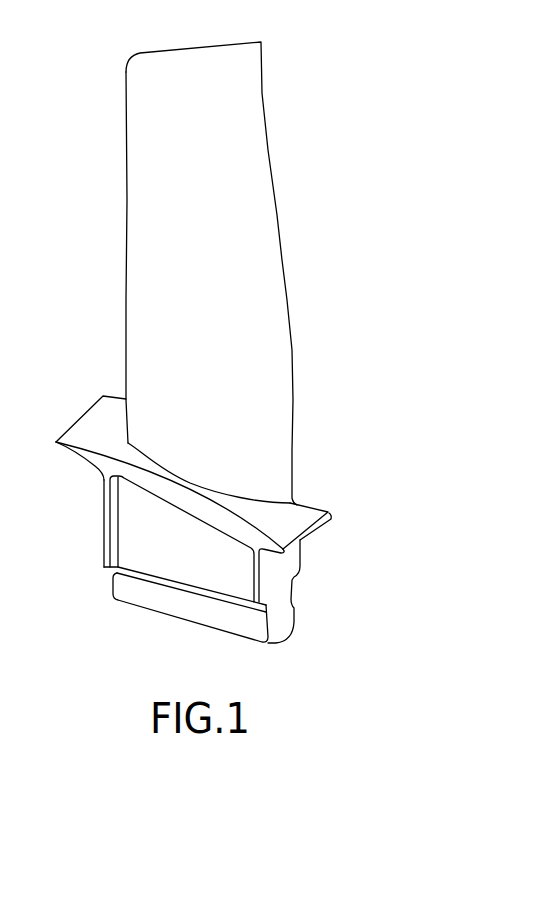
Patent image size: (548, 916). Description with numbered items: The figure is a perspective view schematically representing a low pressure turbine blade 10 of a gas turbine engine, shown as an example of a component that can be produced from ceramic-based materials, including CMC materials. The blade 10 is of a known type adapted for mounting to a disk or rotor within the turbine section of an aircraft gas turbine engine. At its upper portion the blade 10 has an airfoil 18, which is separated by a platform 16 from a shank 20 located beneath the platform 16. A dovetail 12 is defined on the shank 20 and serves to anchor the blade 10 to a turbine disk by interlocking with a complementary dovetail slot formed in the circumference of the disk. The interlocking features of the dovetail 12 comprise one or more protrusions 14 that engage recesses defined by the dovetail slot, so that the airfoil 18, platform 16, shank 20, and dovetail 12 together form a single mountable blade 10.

The low pressure turbine blade 10 is at (230, 356).
The dovetail 12 is at (282, 615).
The protrusion 14 is at (203, 618).
The platform 16 is at (305, 507).
The airfoil 18 is at (268, 268).
The shank 20 is at (137, 547).